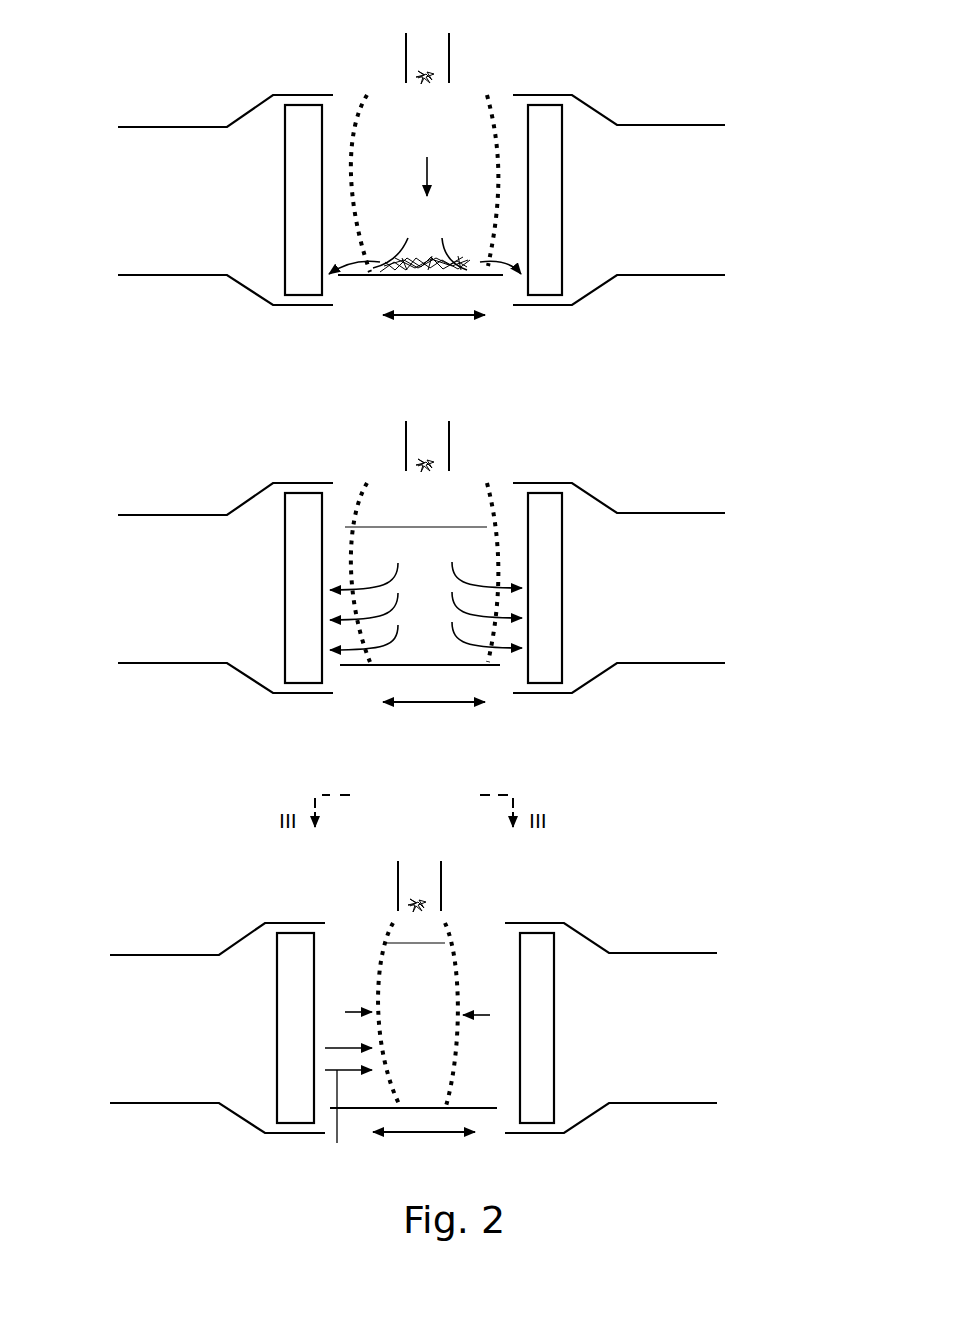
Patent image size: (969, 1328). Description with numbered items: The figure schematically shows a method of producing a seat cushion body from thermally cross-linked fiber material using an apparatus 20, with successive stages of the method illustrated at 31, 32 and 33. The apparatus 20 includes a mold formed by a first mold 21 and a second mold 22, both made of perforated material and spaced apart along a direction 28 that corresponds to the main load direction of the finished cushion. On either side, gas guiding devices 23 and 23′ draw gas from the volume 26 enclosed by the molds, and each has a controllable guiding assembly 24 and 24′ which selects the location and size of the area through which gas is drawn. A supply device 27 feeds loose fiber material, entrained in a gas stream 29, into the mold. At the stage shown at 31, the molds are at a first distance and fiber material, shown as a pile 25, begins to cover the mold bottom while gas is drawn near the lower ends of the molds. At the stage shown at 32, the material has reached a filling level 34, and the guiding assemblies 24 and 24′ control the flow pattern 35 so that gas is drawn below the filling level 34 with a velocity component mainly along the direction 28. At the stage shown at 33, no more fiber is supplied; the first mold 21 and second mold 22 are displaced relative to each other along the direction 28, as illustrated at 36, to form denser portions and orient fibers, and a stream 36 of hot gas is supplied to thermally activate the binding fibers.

The apparatus 20 is at (266, 61).
The first mold 21 is at (366, 94).
The second mold 22 is at (488, 94).
The gas guiding device 23 is at (231, 121).
The gas guiding device 23′ is at (618, 123).
The controllable guiding assembly 24 is at (286, 231).
The controllable guiding assembly 24′ is at (563, 217).
The fiber pile 25 is at (394, 273).
The volume 26 is at (375, 220).
The supply device 27 is at (450, 56).
The direction 28 is at (457, 315).
The gas stream 29 is at (427, 180).
The first stage 31 is at (88, 86).
The later stage 32 is at (86, 474).
The final stage 33 is at (76, 914).
The filling level 34 is at (429, 527).
The flow pattern of gas stream 35 is at (397, 601).
The relative displacement / stream of hot gas 36 is at (364, 1009).